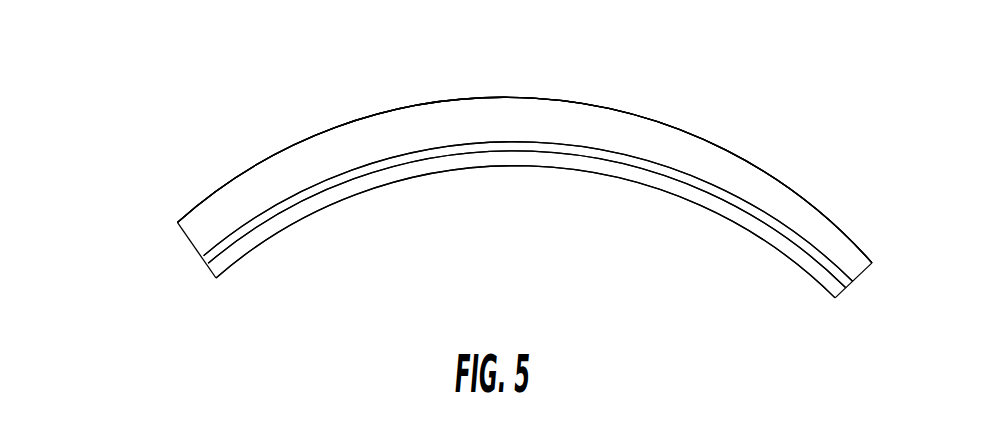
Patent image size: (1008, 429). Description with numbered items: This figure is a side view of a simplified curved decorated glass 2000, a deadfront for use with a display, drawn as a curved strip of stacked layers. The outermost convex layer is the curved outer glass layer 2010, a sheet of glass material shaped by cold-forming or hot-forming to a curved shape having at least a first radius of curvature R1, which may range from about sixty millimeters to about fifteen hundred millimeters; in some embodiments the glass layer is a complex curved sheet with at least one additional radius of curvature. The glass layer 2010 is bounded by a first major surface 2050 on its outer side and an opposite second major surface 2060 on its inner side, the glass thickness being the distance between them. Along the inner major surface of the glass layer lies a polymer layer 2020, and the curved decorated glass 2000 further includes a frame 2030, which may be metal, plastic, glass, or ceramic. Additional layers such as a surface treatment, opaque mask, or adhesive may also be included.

The curved decorated glass 2000 is at (203, 87).
The curved outer glass layer 2010 is at (444, 110).
The polymer layer 2020 is at (207, 262).
The frame 2030 is at (307, 215).
The first major surface 2050 is at (357, 117).
The second major surface 2060 is at (594, 155).
The first radius of curvature R1 is at (517, 105).